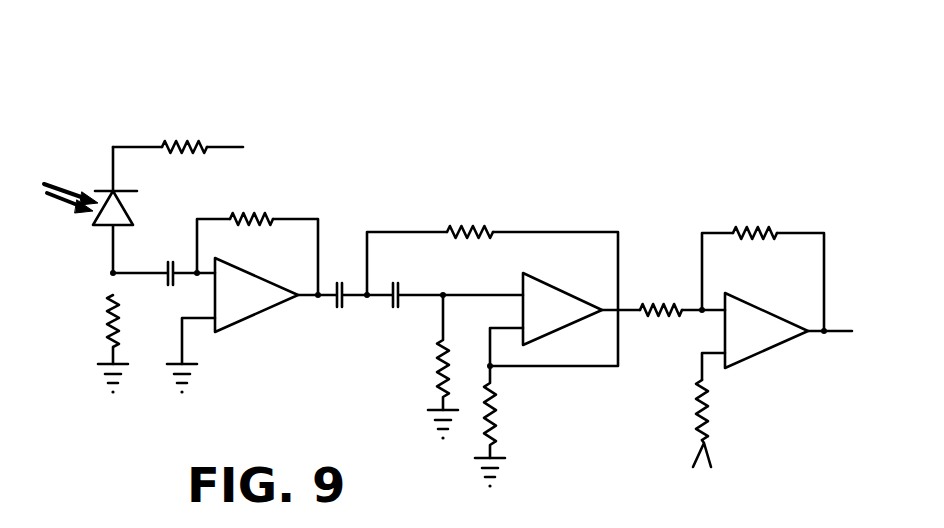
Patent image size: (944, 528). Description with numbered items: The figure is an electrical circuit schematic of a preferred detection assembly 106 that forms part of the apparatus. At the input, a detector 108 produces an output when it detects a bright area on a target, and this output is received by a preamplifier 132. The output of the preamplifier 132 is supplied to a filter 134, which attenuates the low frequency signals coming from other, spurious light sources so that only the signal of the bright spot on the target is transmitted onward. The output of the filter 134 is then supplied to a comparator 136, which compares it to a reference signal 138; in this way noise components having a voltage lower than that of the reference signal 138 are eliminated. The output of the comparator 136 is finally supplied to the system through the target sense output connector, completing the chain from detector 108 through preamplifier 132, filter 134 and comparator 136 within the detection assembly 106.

The detection assembly 106 is at (480, 115).
The detector 108 is at (111, 207).
The preamplifier 132 is at (257, 317).
The filter 134 is at (500, 233).
The comparator 136 is at (753, 358).
The reference signal 138 is at (695, 460).